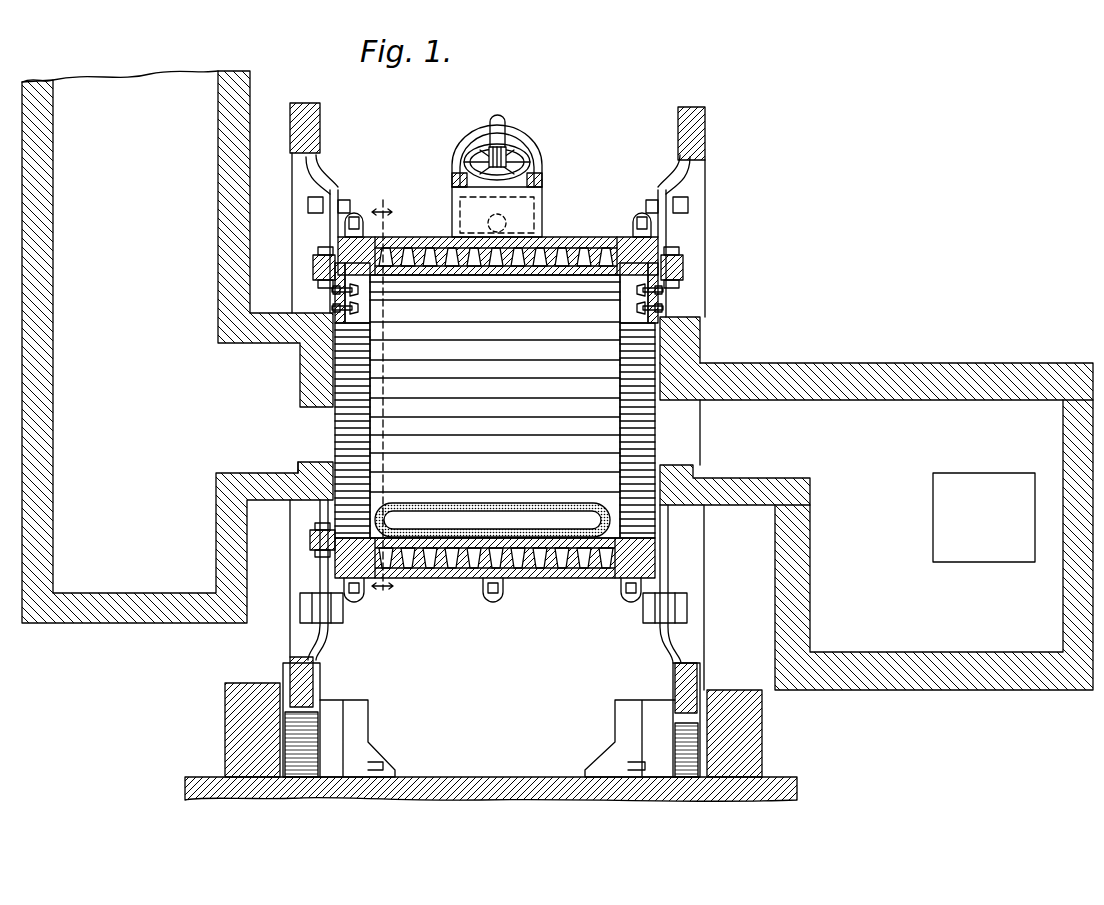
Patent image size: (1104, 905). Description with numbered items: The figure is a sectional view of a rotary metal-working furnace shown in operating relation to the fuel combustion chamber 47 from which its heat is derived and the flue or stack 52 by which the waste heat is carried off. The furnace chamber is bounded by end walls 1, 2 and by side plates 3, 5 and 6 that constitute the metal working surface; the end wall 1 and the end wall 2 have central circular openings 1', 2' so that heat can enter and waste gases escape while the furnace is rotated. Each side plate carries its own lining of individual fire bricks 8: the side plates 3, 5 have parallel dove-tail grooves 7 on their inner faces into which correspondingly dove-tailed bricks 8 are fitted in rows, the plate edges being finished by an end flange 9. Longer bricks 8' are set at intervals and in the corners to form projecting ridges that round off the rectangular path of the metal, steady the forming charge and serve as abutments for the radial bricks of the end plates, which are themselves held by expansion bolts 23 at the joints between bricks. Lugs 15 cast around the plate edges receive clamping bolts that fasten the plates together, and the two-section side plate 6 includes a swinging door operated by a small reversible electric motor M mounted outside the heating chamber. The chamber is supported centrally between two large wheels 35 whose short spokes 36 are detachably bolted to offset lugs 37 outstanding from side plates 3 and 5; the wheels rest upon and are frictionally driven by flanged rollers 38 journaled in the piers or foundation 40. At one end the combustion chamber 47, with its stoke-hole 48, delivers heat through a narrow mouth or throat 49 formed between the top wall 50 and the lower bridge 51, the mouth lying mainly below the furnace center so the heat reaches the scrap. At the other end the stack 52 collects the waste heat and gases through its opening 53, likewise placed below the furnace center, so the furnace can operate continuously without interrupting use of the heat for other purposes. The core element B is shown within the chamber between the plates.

The end wall 1 is at (676, 293).
The central circular opening 1' is at (702, 336).
The end wall 2 is at (314, 293).
The central circular opening 2' is at (447, 430).
The side plate 3 is at (552, 240).
The side plate 5 is at (450, 576).
The side plate 6 is at (382, 399).
The dove-tail grooves 7 is at (598, 240).
The core sheets 8 is at (492, 406).
The longer bricks 8' is at (495, 331).
The end flange 9 is at (661, 257).
The lugs 15 is at (358, 218).
The expansion bolts 23 is at (630, 291).
The wheels 35 is at (305, 130).
The spokes 36 is at (327, 172).
The offset lugs 37 is at (330, 228).
The flanged rollers 38 is at (305, 727).
The piers or foundation 40 is at (440, 790).
The fuel combustion chamber 47 is at (934, 545).
The stoke-hole 48 is at (1002, 535).
The mouth or throat 49 is at (686, 432).
The top wall 50 is at (737, 372).
The lower bridge 51 is at (687, 467).
The flue or stack 52 is at (177, 347).
The opening 53 is at (317, 430).
The reversible electric motor M is at (528, 137).
The core element B is at (410, 517).